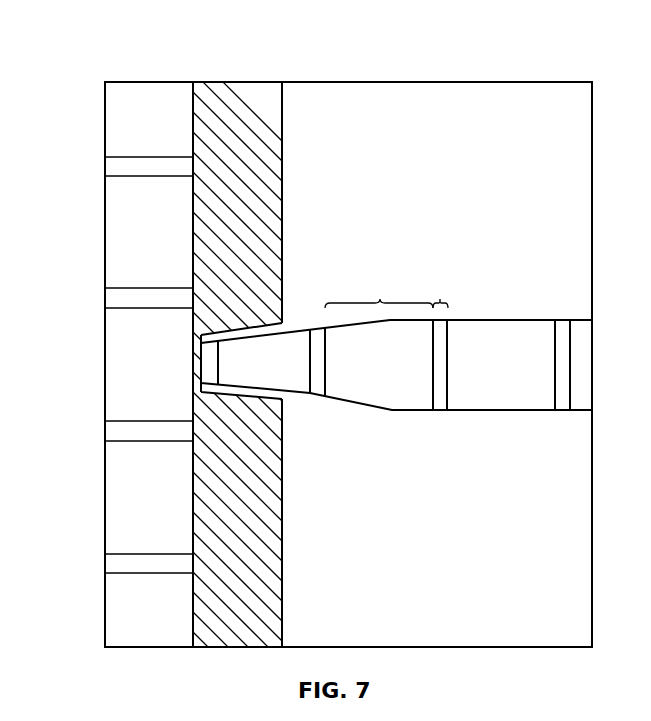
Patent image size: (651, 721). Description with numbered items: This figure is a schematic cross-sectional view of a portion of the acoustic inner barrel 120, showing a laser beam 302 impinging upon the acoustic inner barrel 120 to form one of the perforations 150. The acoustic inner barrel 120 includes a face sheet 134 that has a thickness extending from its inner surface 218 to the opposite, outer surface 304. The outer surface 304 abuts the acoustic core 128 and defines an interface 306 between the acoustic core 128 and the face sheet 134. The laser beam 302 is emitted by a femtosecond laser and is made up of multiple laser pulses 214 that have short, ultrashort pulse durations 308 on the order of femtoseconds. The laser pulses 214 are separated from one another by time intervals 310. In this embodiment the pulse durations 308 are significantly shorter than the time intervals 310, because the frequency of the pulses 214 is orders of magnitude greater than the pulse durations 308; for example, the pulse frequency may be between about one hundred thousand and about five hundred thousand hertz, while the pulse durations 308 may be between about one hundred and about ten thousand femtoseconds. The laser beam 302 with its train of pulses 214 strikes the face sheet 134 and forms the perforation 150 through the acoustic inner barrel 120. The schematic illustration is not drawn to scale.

The acoustic inner barrel 120 is at (193, 70).
The acoustic core 128 is at (153, 163).
The outer surface 304 is at (192, 245).
The face sheet 134 is at (265, 178).
The inner surface 218 is at (282, 225).
The interface 306 is at (190, 651).
The laser beam 302 is at (528, 410).
The laser pulses 214 is at (218, 372).
The perforation 150 is at (265, 396).
The time intervals 310 is at (380, 299).
The pulse durations 308 is at (440, 299).